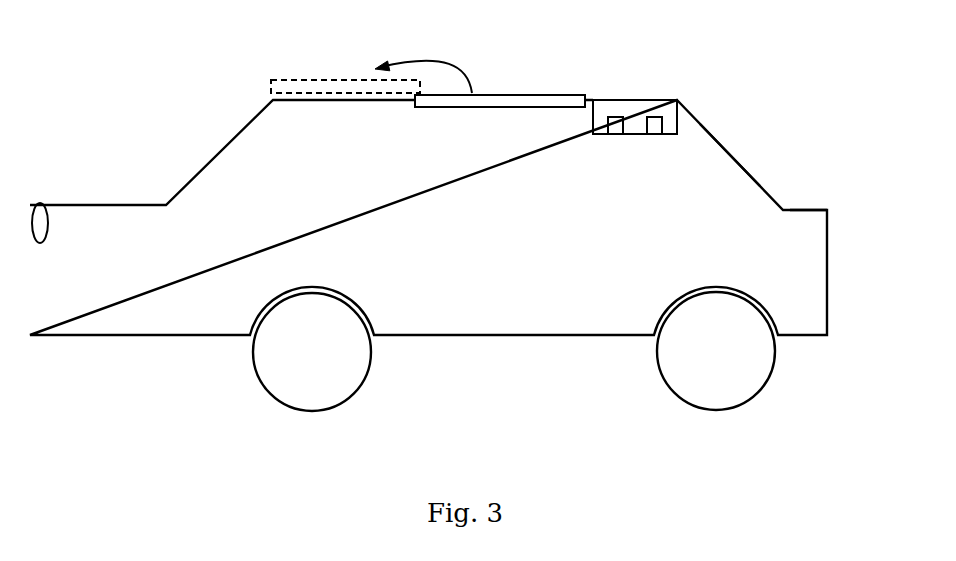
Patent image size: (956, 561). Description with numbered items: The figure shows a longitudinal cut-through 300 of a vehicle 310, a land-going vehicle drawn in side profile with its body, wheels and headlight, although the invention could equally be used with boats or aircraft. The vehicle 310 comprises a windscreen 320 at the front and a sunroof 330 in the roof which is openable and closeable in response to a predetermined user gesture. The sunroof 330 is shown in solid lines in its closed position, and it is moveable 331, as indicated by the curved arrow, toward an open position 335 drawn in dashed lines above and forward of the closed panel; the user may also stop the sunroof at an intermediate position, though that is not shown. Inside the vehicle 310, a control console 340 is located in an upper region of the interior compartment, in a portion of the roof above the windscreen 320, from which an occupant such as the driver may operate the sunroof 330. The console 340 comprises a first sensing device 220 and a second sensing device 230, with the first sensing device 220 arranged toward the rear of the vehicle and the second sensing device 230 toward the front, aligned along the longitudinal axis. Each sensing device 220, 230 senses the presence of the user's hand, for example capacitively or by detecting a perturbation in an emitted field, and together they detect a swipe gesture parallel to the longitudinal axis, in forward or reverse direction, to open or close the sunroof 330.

The longitudinal cut-through 300 is at (451, 234).
The vehicle 310 is at (810, 208).
The windscreen 320 is at (740, 162).
The sunroof 330 is at (517, 95).
The movement of sunroof 331 is at (450, 65).
The open position 335 is at (307, 78).
The control console 340 is at (633, 110).
The first sensing device 220 is at (617, 136).
The second sensing device 230 is at (653, 136).